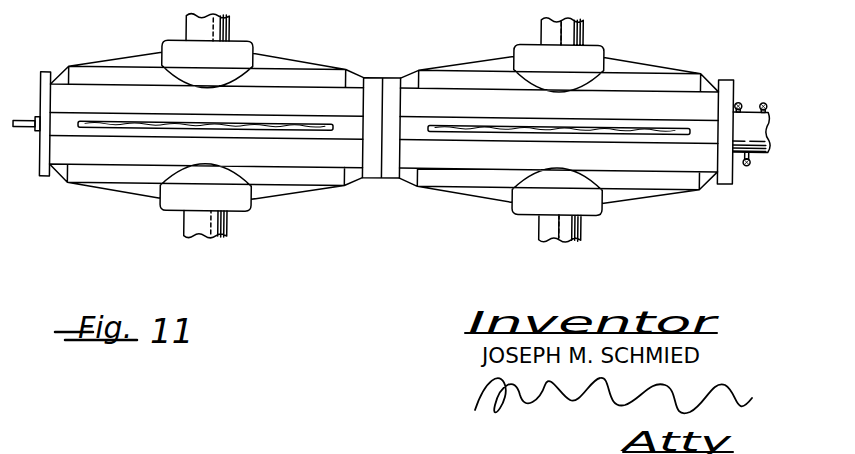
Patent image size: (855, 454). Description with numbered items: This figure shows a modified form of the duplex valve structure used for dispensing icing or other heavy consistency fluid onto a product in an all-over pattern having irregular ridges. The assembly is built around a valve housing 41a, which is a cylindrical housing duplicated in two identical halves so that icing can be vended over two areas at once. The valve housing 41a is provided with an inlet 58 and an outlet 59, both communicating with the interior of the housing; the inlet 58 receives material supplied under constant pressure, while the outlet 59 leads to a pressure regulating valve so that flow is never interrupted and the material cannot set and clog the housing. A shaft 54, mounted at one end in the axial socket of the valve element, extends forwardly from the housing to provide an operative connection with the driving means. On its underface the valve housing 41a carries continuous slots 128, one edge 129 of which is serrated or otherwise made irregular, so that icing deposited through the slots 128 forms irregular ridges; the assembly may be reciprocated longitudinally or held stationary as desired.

The inlet 58 is at (226, 29).
The outlet 59 is at (184, 231).
The valve housing 41a is at (383, 111).
The continuous slots 128 is at (205, 143).
The edge 129 is at (380, 111).
The shaft 54 is at (752, 116).